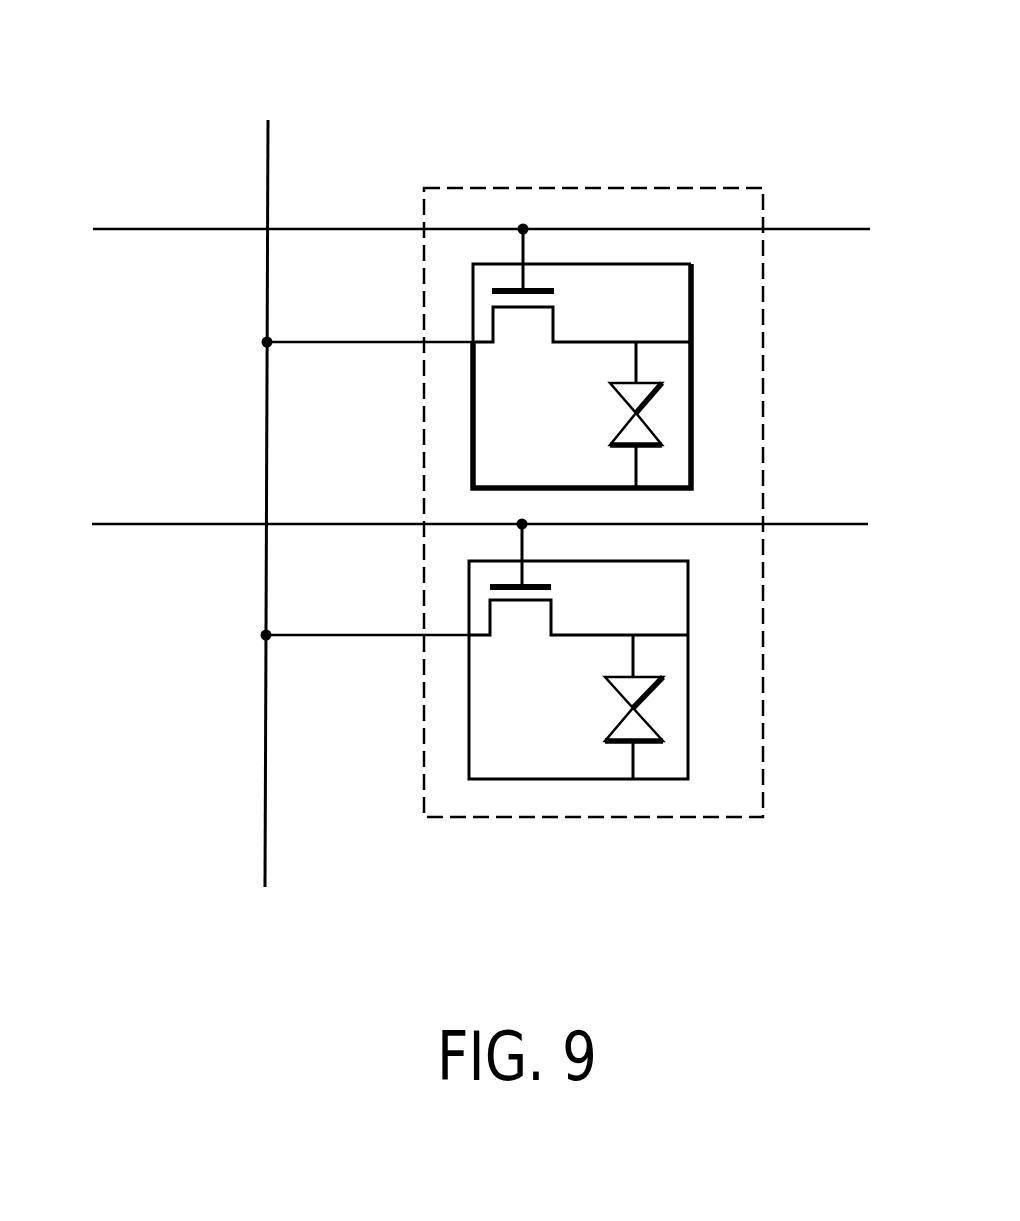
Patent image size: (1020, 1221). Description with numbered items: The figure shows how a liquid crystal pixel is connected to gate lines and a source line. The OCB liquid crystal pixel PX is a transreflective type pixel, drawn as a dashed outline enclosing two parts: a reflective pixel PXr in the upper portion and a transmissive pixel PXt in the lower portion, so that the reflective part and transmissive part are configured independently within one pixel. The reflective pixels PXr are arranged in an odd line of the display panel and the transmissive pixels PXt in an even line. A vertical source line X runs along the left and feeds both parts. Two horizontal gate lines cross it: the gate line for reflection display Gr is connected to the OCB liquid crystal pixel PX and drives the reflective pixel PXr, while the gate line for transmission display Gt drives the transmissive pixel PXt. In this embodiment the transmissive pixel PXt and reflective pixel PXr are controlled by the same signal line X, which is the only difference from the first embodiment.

The source line X is at (268, 482).
The gate line for reflection display Gr is at (457, 227).
The gate line for transmission display Gt is at (456, 520).
The OCB liquid crystal pixel PX is at (708, 160).
The reflective pixel PXr is at (692, 297).
The transmissive pixel PXt is at (688, 597).